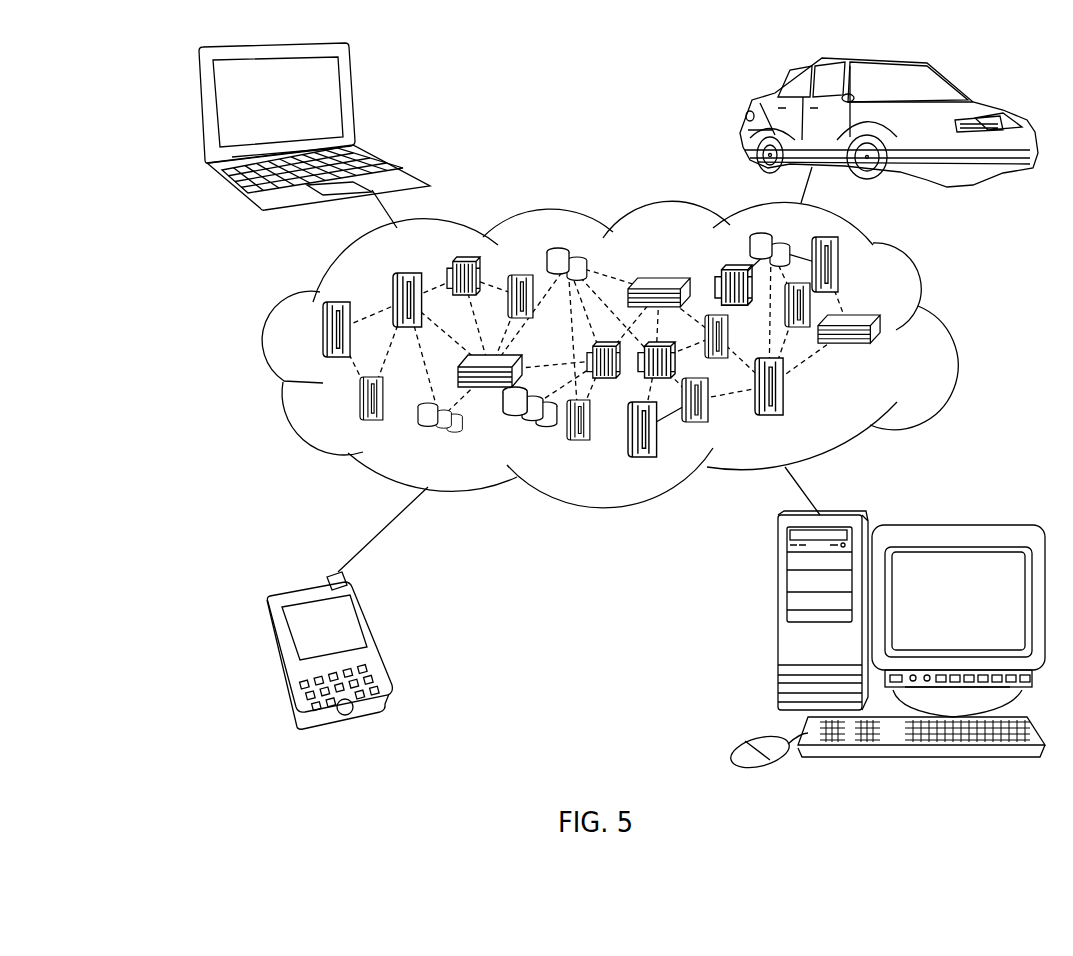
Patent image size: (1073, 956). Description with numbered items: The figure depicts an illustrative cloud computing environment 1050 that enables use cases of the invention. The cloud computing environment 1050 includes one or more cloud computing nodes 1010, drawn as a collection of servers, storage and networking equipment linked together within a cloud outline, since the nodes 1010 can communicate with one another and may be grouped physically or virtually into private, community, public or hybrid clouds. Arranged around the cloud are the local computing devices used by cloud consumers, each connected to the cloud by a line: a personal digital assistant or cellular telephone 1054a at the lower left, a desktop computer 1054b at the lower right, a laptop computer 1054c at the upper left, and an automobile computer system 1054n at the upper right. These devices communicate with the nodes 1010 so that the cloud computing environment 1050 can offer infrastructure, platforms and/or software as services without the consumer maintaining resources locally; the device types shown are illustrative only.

The laptop computer 1054c is at (353, 92).
The automobile computer system 1054n is at (752, 107).
The cloud computing environment 1050 is at (922, 280).
The cloud computing nodes 1010 is at (897, 350).
The personal digital assistant or cellular telephone 1054a is at (373, 632).
The desktop computer 1054b is at (778, 624).